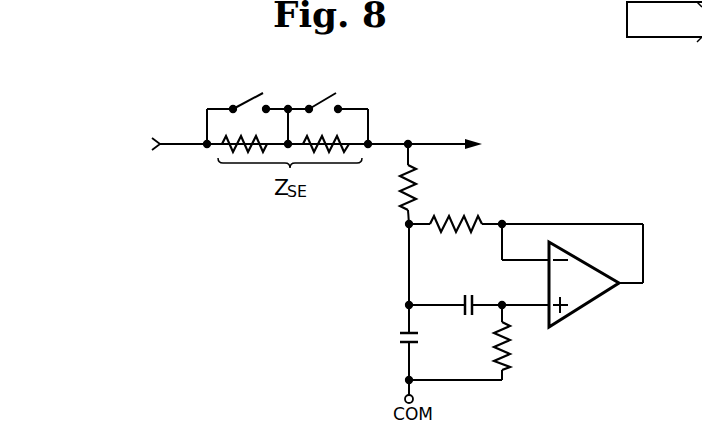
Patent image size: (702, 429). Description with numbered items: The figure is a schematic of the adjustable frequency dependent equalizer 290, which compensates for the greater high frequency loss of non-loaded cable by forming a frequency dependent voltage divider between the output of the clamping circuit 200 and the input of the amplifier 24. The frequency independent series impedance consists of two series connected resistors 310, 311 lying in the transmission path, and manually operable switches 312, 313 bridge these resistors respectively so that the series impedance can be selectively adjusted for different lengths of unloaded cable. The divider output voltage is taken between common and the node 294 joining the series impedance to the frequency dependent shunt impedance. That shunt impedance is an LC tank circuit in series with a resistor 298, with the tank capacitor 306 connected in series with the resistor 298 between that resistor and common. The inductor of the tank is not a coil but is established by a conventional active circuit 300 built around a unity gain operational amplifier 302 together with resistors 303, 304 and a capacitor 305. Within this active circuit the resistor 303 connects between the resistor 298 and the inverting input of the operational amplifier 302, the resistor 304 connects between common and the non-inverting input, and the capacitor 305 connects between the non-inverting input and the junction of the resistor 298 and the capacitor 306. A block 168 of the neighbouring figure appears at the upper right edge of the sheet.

The block of adjacent figure 168 is at (661, 38).
The clamping circuit 200 is at (105, 145).
The amplifier 24 is at (503, 143).
The adjustable frequency dependent equalizer 290 is at (426, 93).
The node 294 is at (411, 143).
The resistor 298 is at (417, 189).
The active circuit 300 is at (596, 316).
The operational amplifier 302 is at (578, 259).
The resistor 303 is at (475, 218).
The resistor 304 is at (519, 351).
The capacitor 305 is at (463, 300).
The capacitor 306 is at (405, 343).
The resistor 310 is at (222, 146).
The resistor 311 is at (324, 148).
The manually operable switch 312 is at (258, 96).
The manually operable switch 313 is at (328, 96).